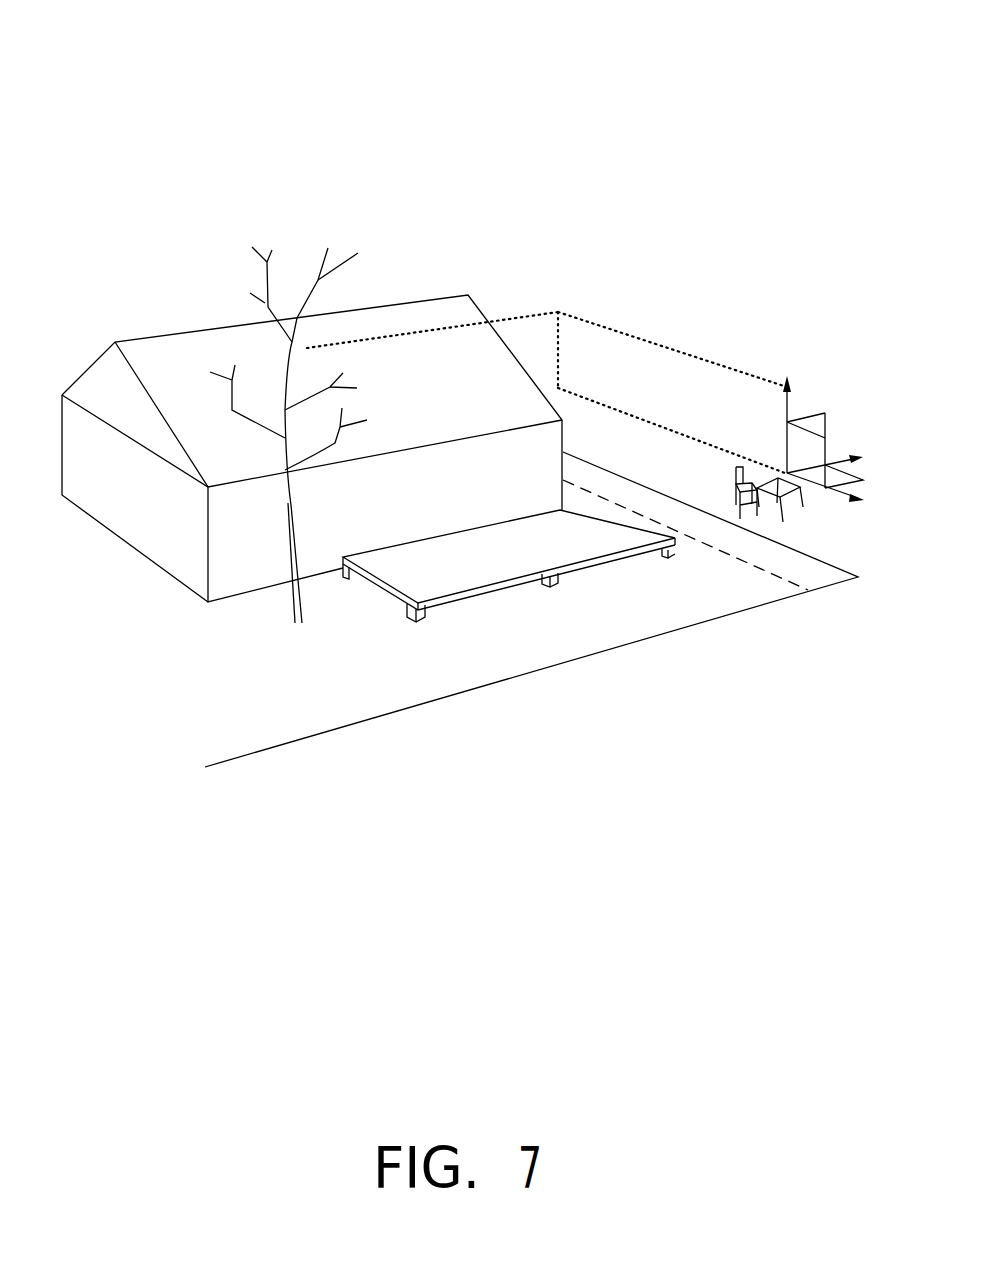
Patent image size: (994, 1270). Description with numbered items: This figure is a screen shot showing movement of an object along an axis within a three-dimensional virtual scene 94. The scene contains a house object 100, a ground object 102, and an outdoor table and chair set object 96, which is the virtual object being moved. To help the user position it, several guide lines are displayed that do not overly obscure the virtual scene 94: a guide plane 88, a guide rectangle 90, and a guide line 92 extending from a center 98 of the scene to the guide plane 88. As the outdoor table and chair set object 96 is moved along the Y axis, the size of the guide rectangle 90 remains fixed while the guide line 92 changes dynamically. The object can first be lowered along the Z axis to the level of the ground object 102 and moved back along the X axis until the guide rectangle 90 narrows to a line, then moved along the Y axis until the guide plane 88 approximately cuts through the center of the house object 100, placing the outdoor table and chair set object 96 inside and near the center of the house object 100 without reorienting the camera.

The 3D virtual scene 94 is at (115, 112).
The house object 100 is at (63, 448).
The center 98 is at (307, 348).
The guide line 92 is at (435, 330).
The guide rectangle 90 is at (673, 348).
The outdoor table and chair set object 96 is at (814, 521).
The guide plane 88 is at (755, 567).
The ground object 102 is at (277, 720).